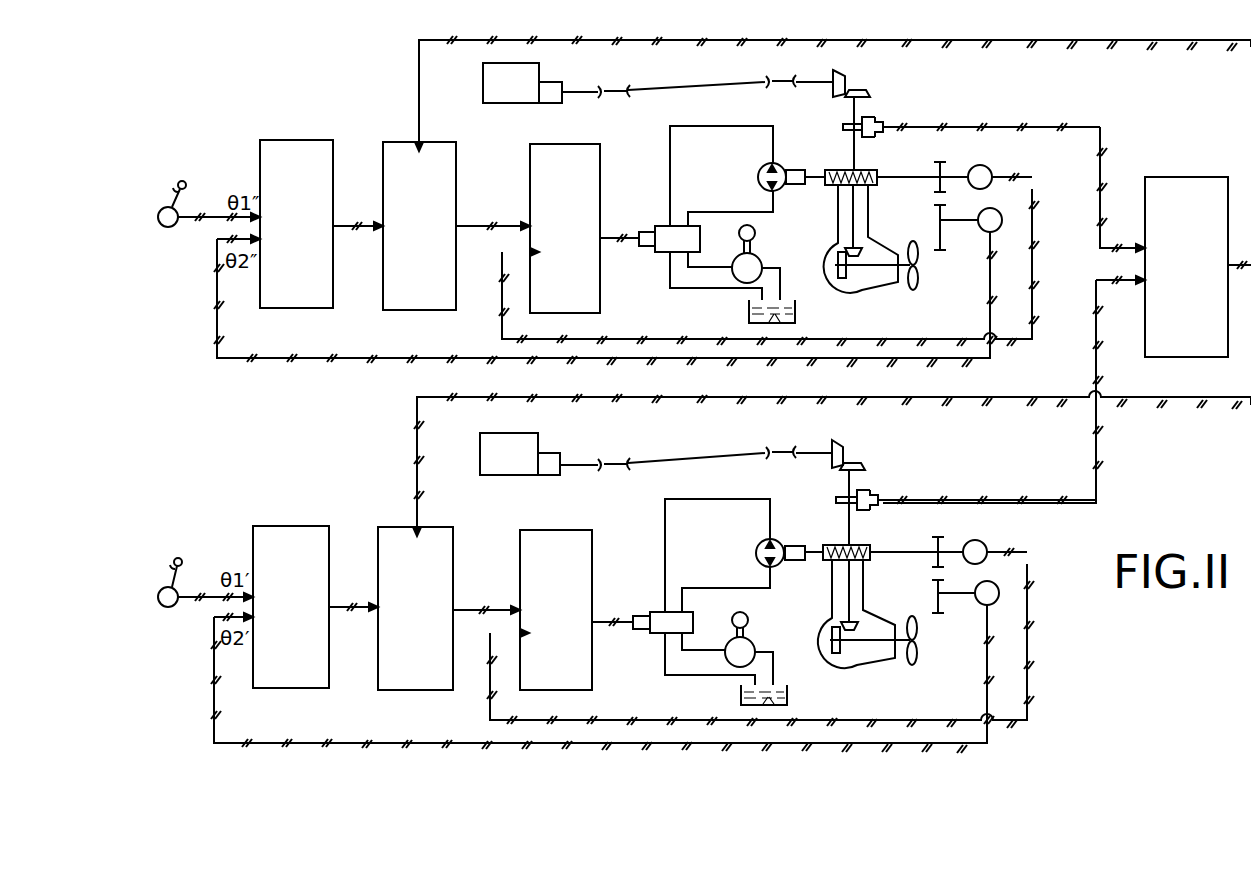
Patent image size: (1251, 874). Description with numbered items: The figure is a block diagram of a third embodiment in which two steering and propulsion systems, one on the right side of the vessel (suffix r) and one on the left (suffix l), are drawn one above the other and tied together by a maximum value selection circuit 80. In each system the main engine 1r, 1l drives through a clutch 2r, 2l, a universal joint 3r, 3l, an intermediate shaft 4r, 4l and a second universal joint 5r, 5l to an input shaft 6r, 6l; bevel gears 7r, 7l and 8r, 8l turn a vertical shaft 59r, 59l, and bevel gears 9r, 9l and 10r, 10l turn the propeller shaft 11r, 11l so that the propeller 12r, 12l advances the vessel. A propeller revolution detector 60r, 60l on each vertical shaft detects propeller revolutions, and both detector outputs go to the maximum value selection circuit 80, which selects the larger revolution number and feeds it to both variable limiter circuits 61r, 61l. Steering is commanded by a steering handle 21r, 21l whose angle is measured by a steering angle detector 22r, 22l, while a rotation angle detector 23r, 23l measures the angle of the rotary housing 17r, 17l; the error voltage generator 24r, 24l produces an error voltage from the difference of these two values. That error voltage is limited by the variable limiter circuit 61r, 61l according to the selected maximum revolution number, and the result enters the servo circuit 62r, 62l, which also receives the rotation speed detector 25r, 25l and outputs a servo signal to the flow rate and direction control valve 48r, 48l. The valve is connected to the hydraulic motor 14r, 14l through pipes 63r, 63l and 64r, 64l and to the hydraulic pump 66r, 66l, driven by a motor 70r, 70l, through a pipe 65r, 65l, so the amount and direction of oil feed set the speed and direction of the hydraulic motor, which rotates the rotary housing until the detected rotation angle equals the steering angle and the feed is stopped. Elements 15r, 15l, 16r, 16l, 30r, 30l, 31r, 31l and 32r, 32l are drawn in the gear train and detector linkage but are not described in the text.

The main engine 1r is at (539, 65).
The clutch 2r is at (548, 98).
The universal joint 3r is at (618, 88).
The intermediate shaft 4r is at (700, 86).
The universal joint 5r is at (783, 80).
The input shaft 6r is at (808, 84).
The bevel gear 7r is at (845, 80).
The bevel gear 8r is at (868, 93).
The bevel gear 9r is at (838, 240).
The bevel gear 10r is at (838, 272).
The propeller shaft 11r is at (875, 283).
The propeller 12r is at (918, 280).
The hydraulic motor 14r is at (762, 170).
The right bevel pinion 15r is at (868, 188).
The right clutch 16r is at (870, 172).
The rotary housing 17r is at (852, 290).
The steering handle 21r is at (186, 186).
The steering angle detector 22r is at (166, 227).
The rotation angle detector 23r is at (1000, 212).
The error voltage generator 24r is at (333, 162).
The rotation speed detector 25r is at (990, 168).
The right steering shaft 30r is at (930, 176).
The right coupling 31r is at (944, 198).
The right detector shaft 32r is at (940, 250).
The flow rate and direction control valve 48r is at (657, 253).
The vertical shaft 59r is at (852, 150).
The propeller revolution detector 60r is at (878, 120).
The variable limiter circuit 61r is at (456, 192).
The servo circuit 62r is at (600, 162).
The pipe 63r is at (670, 186).
The pipe 64r is at (718, 212).
The pipe 65r is at (715, 266).
The hydraulic pump 66r is at (760, 260).
The motor 70r is at (755, 233).
The main engine 1l is at (510, 433).
The clutch 2l is at (556, 455).
The universal joint 3l is at (615, 462).
The intermediate shaft 4l is at (690, 458).
The universal joint 5l is at (780, 453).
The input shaft 6l is at (810, 453).
The bevel gear 7l is at (840, 446).
The bevel gear 8l is at (863, 466).
The bevel gear 9l is at (832, 612).
The bevel gear 10l is at (836, 655).
The propeller shaft 11l is at (882, 660).
The propeller 12l is at (917, 654).
The hydraulic motor 14l is at (760, 545).
The left bevel pinion 15l is at (866, 562).
The left clutch 16l is at (870, 548).
The rotary housing 17l is at (888, 625).
The steering handle 21l is at (182, 563).
The steering angle detector 22l is at (166, 607).
The rotation angle detector 23l is at (1001, 574).
The error voltage generator 24l is at (300, 526).
The rotation speed detector 25l is at (985, 542).
The left steering shaft 30l is at (810, 550).
The left coupling 31l is at (942, 573).
The left detector shaft 32l is at (938, 613).
The flow rate and direction control valve 48l is at (652, 634).
The vertical shaft 59l is at (850, 528).
The propeller revolution detector 60l is at (873, 493).
The variable limiter circuit 61l is at (451, 515).
The servo circuit 62l is at (561, 518).
The pipe 63l is at (665, 576).
The pipe 64l is at (710, 588).
The pipe 65l is at (708, 650).
The hydraulic pump 66l is at (753, 644).
The motor 70l is at (748, 618).
The maximum value selection circuit 80 is at (1192, 177).